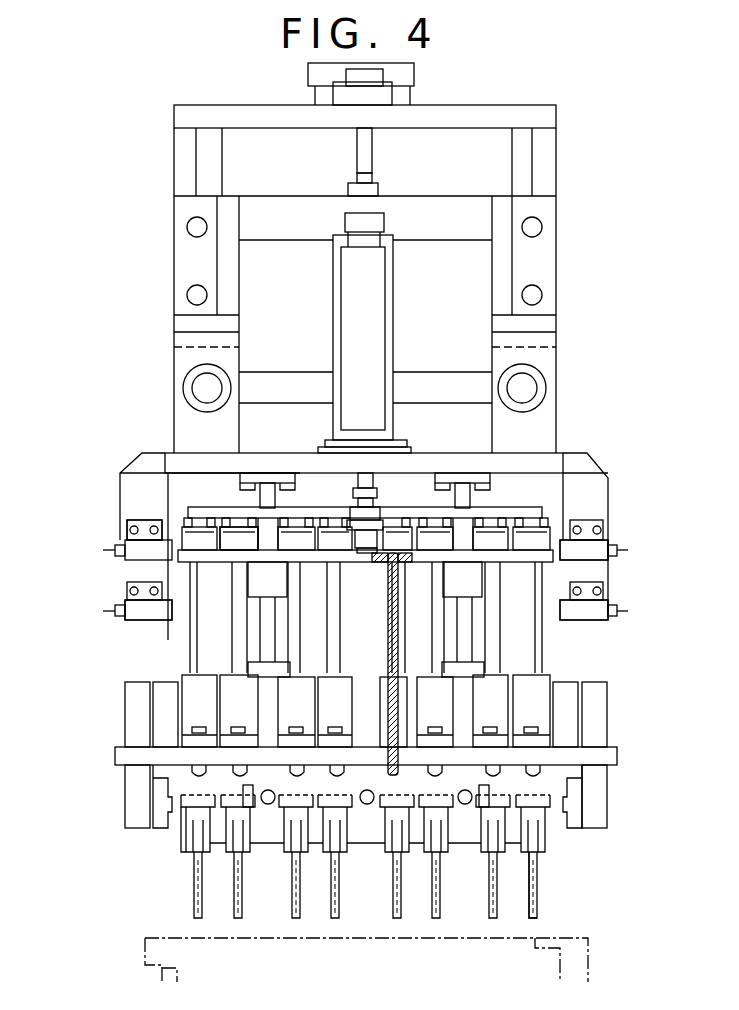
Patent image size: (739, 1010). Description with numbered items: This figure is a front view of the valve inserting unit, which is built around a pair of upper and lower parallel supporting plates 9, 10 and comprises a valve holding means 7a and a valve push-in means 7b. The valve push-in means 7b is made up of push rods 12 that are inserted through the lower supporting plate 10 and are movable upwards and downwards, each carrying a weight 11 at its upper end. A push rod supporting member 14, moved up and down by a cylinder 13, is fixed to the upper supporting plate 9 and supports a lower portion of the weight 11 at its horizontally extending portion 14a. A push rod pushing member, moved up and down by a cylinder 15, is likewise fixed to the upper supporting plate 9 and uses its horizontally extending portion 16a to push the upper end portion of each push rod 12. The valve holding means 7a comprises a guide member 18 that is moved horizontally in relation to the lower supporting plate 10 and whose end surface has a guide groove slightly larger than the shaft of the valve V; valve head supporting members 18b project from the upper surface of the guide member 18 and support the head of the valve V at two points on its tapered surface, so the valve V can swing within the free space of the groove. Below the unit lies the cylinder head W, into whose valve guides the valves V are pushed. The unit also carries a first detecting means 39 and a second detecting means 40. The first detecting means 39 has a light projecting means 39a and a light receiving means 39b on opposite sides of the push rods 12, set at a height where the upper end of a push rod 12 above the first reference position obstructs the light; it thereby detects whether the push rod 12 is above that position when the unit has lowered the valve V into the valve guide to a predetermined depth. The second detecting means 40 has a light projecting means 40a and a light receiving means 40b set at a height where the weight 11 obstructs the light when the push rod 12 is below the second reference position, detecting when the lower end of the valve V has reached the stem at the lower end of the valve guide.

The cylinder 13 is at (376, 311).
The cylinder 15 is at (344, 318).
The upper supporting plate 9 is at (548, 464).
The horizontally extending portion 16a is at (185, 466).
The weight 11 is at (338, 537).
The push rod supporting member 14 is at (231, 568).
The horizontally extending portion 14a is at (188, 556).
The push rod 12 is at (340, 636).
The valve push-in means 7b is at (183, 646).
The valve holding means 7a is at (181, 853).
The lower supporting plate 10 is at (602, 756).
The guide member 18 is at (548, 852).
The valve head supporting members 18b is at (560, 827).
The first detecting means 39 is at (100, 541).
The light projecting means 39a is at (588, 553).
The light receiving means 39b is at (140, 548).
The second detecting means 40 is at (99, 611).
The light projecting means 40a is at (590, 612).
The light receiving means 40b is at (142, 609).
The valve V is at (538, 912).
The cylinder head W is at (590, 962).